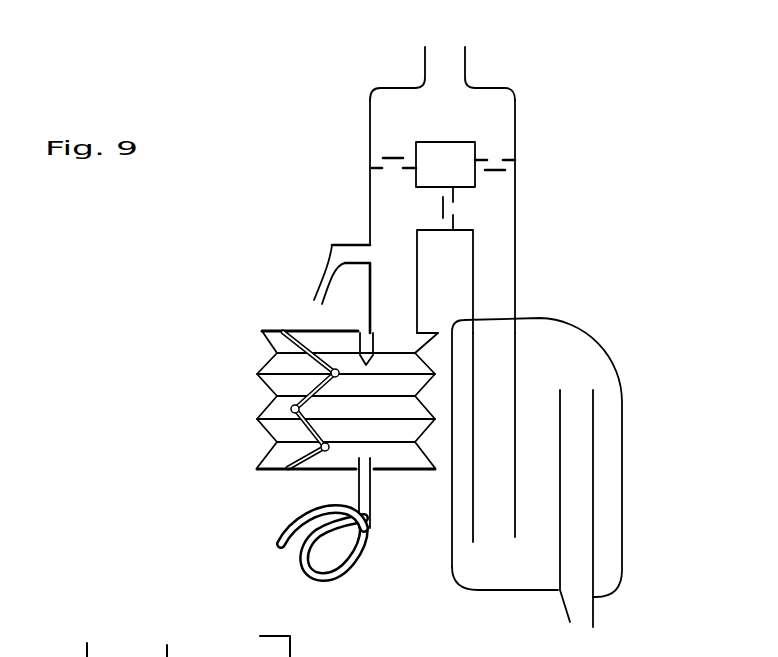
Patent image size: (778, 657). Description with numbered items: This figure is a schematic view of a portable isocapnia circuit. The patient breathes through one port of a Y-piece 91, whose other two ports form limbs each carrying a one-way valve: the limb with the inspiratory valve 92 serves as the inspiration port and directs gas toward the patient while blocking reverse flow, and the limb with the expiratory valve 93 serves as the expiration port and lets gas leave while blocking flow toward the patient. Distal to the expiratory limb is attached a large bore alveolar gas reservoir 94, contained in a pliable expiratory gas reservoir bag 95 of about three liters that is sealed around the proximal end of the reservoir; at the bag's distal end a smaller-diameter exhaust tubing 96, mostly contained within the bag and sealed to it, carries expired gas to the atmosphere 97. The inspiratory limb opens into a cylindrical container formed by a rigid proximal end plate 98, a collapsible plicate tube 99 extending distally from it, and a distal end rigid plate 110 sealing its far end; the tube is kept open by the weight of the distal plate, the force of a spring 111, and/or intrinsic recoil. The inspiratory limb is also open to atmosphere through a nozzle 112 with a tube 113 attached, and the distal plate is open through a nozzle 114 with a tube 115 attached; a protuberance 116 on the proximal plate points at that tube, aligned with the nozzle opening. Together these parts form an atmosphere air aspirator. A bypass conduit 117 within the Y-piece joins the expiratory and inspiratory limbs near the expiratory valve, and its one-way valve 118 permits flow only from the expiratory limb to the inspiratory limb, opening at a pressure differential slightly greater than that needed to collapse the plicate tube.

The Y-piece 91 is at (449, 44).
The inspiratory valve 92 is at (370, 162).
The expiratory valve 93 is at (530, 155).
The alveolar gas reservoir 94 is at (515, 397).
The expiratory gas reservoir bag 95 is at (584, 317).
The exhaust tubing 96 is at (599, 419).
The atmosphere 97 is at (588, 634).
The proximal end plate 98 is at (255, 330).
The collapsible plicate tube 99 is at (255, 374).
The distal end rigid plate 110 is at (255, 468).
The spring 111 is at (303, 425).
The nozzle 112 is at (362, 236).
The tube 113 is at (313, 278).
The nozzle 114 is at (348, 483).
The tube 115 is at (299, 560).
The protuberance 116 is at (351, 343).
The bypass conduit 117 is at (424, 208).
The one-way valve 118 is at (460, 232).